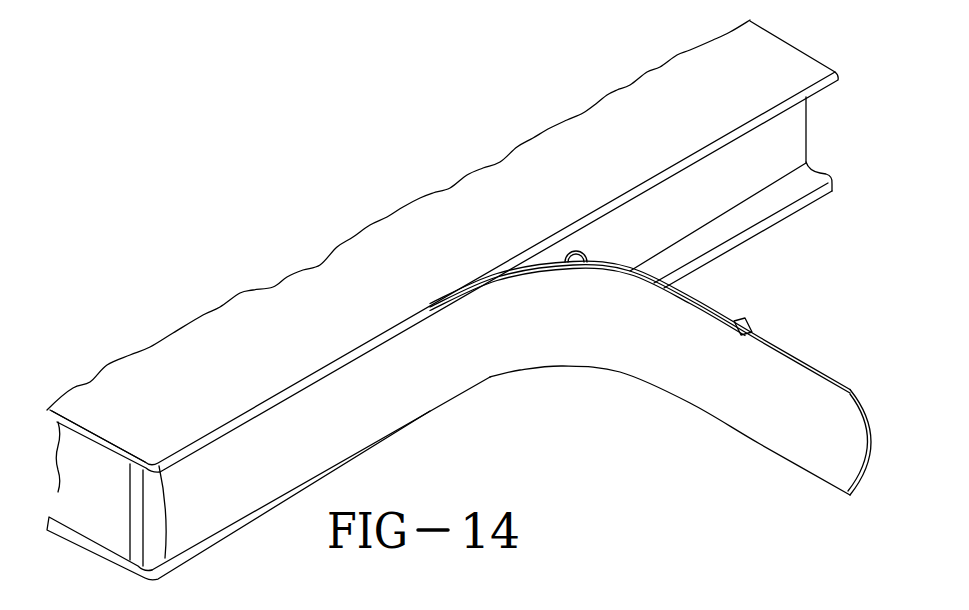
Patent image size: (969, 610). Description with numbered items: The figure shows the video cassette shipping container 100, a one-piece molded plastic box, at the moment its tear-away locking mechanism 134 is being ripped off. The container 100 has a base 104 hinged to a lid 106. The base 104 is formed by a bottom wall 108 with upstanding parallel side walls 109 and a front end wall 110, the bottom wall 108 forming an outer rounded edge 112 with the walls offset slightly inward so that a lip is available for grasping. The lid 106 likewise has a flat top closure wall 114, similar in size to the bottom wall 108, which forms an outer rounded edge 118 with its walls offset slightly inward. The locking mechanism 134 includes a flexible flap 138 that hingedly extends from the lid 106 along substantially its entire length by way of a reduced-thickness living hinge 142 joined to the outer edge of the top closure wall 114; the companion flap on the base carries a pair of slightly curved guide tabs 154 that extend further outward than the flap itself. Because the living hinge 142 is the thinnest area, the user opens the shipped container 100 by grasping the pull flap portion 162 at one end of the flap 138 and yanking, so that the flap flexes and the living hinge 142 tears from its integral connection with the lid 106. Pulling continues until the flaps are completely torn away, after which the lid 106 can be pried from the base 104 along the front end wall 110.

The video cassette shipping container 100 is at (225, 256).
The base 104 is at (766, 243).
The lid 106 is at (407, 196).
The bottom wall 108 is at (812, 175).
The side walls 109 is at (95, 508).
The front end wall 110 is at (787, 133).
The outer rounded edge 112 is at (797, 206).
The top closure wall 114 is at (360, 252).
The outer rounded edge 118 is at (773, 32).
The locking mechanism 134 is at (501, 445).
The flap 138 is at (726, 431).
The living hinge 142 is at (702, 307).
The guide tabs 154 is at (582, 249).
The pull flap portion 162 is at (833, 460).